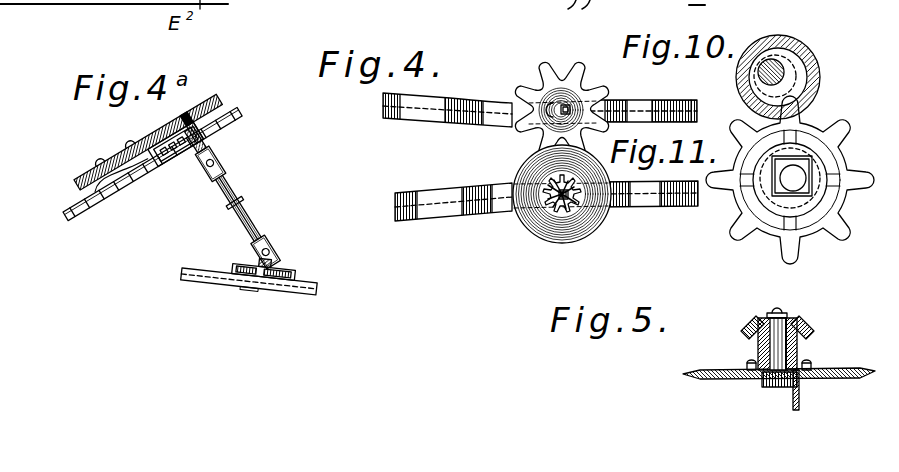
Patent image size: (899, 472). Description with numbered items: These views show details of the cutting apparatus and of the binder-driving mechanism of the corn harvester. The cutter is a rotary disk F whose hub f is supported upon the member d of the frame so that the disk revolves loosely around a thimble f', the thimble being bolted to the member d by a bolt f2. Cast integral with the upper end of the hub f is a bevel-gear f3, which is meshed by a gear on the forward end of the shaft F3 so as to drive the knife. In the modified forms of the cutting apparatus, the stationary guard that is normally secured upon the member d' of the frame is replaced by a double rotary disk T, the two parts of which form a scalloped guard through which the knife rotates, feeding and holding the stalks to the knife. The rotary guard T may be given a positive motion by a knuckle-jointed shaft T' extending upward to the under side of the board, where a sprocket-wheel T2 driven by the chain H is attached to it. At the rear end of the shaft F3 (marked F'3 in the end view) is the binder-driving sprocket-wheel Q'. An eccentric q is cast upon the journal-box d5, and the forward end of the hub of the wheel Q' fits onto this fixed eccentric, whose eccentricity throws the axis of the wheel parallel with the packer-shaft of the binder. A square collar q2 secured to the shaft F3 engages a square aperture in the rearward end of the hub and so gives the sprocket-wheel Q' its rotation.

In FIG. 4A, the chain H is at (118, 191).
In FIG. 4A, the sprocket-wheel T2 is at (213, 127).
In FIG. 4A, the knuckle-jointed shaft T' is at (224, 184).
In FIG. 4A, the double rotary disk T is at (268, 257).
In FIG. 4, the double rotary disk T is at (557, 101).
In FIG. 4A, the member of the frame d' is at (248, 292).
In FIG. 4, the member of the frame d' is at (540, 126).
In FIG. 4, the member of the frame d is at (546, 192).
In FIG. 5, the member of the frame d is at (812, 390).
In FIG. 4, the rotary disk F is at (562, 207).
In FIG. 5, the rotary disk F is at (777, 359).
In FIG. 4, the bevel-gear f3 is at (550, 206).
In FIG. 5, the bevel-gear f3 is at (800, 328).
In FIG. 4, the bolt f2 is at (560, 214).
In FIG. 5, the bolt f2 is at (773, 387).
In FIG. 10, the journal-box d5 is at (768, 46).
In FIG. 10, the shaft F3 is at (773, 63).
In FIG. 10, the eccentric q is at (794, 62).
In FIG. 10, the binder-driving sprocket-wheel Q' is at (799, 77).
In FIG. 11, the binder-driving sprocket-wheel Q' is at (790, 180).
In FIG. 11, the square collar q2 is at (808, 157).
In FIG. 11, the hub F'3 is at (803, 200).
In FIG. 5, the thimble f' is at (801, 322).
In FIG. 5, the hub f is at (784, 339).